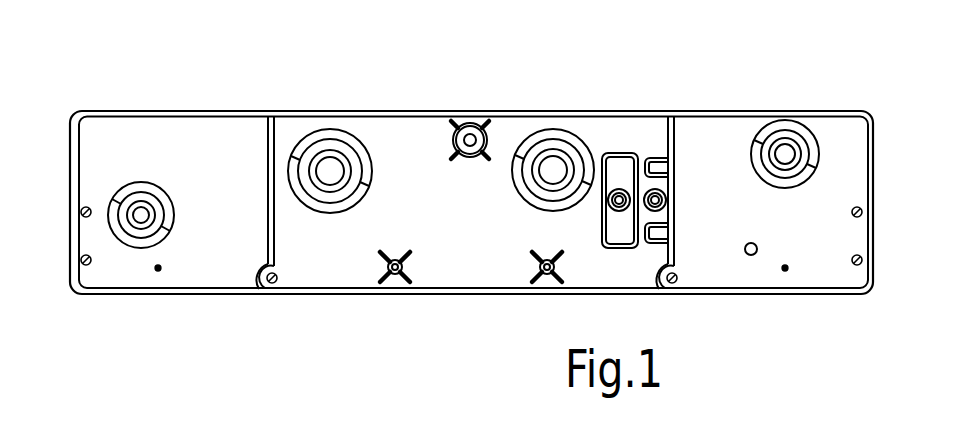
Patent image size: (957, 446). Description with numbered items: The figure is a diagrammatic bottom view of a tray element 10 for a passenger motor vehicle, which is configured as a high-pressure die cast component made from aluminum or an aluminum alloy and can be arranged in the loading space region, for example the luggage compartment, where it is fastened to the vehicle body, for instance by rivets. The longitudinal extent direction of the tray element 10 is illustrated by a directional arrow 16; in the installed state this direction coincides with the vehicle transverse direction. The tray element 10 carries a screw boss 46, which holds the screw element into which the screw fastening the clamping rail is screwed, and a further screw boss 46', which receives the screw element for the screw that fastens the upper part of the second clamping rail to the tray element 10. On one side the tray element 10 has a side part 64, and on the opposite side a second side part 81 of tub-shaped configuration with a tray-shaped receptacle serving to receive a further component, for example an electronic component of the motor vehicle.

The tray element 10 is at (717, 121).
The directional arrow 16 is at (445, 99).
The screw boss 46 is at (630, 156).
The screw boss 46' is at (701, 200).
The side part 64 is at (191, 305).
The second side part 81 is at (744, 305).